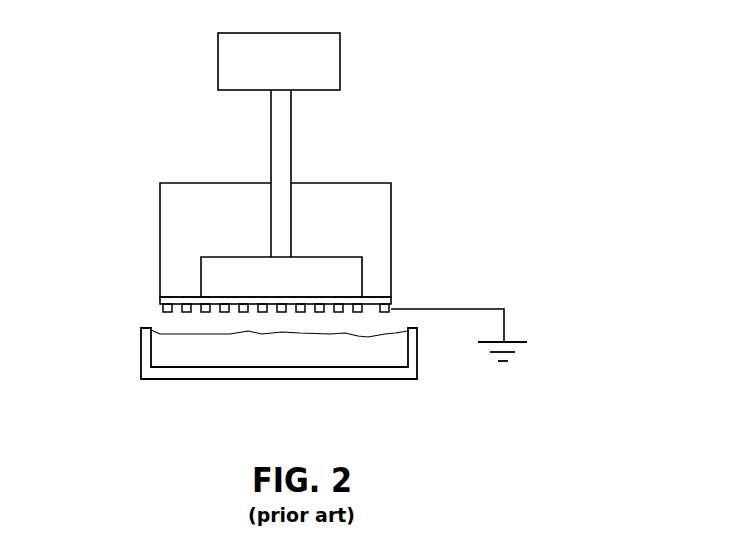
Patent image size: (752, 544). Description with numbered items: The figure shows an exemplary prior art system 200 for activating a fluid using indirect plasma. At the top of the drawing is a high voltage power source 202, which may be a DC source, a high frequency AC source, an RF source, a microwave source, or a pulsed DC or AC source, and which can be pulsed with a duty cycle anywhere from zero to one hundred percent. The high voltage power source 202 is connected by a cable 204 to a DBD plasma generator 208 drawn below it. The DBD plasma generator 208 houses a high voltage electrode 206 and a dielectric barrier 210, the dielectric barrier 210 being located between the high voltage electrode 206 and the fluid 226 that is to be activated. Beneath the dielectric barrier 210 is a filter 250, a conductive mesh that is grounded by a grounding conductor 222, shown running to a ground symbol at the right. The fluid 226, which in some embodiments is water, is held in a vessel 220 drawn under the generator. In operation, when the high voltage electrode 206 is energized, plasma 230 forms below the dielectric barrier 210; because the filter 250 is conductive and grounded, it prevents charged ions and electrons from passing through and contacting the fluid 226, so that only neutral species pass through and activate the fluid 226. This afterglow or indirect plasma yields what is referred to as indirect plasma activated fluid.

The system 200 is at (506, 135).
The high voltage power source 202 is at (340, 33).
The cable 204 is at (291, 137).
The high voltage electrode 206 is at (362, 270).
The DBD plasma generator 208 is at (392, 215).
The dielectric barrier 210 is at (391, 297).
The tray 220 is at (141, 348).
The grounding conductor 222 is at (504, 328).
The fluid 226 is at (272, 347).
The plasma 230 is at (193, 312).
The filter 250 is at (165, 309).